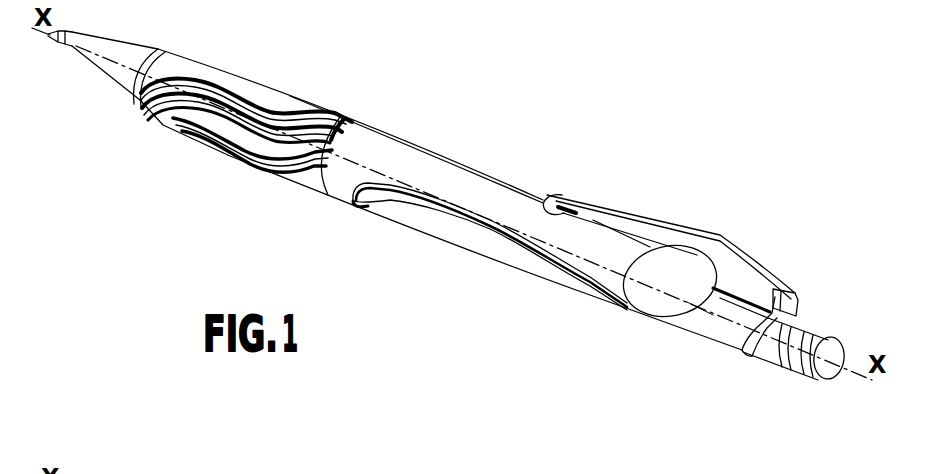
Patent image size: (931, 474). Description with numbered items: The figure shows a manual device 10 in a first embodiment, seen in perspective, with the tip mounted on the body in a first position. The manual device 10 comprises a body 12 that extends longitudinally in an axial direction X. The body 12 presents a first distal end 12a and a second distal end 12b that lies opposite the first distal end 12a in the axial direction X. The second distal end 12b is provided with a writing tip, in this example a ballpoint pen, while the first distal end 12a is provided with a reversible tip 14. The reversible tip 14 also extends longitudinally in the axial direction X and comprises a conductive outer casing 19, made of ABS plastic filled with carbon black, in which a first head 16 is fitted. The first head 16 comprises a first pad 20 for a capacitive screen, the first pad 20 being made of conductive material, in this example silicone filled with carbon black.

The manual device 10 is at (173, 147).
The body 12 is at (423, 224).
The first distal end 12a is at (715, 350).
The second distal end 12b is at (84, 63).
The reversible tip 14 is at (813, 312).
The first head 16 is at (832, 382).
The conductive outer casing 19 is at (765, 357).
The first pad 20 is at (828, 357).